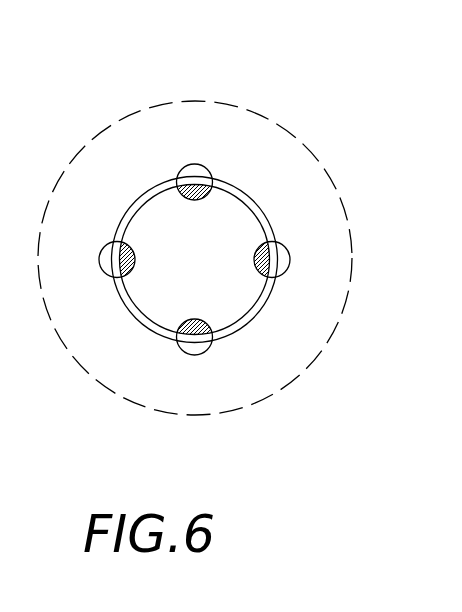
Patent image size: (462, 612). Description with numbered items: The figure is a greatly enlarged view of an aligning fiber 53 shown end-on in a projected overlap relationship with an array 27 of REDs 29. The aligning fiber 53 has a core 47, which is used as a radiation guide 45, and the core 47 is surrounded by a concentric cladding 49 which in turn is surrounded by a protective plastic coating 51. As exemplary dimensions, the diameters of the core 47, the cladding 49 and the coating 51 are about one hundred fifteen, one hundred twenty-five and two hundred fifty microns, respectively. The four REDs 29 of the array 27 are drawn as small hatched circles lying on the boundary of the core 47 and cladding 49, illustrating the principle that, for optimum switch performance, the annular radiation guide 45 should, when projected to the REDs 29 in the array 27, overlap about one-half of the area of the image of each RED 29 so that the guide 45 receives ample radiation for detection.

The array 27 is at (223, 257).
The REDs 29 is at (194, 172).
The radiation guide 45 is at (250, 227).
The core 47 is at (240, 232).
The cladding 49 is at (255, 322).
The protective plastic coating 51 is at (248, 407).
The aligning fiber 53 is at (223, 278).